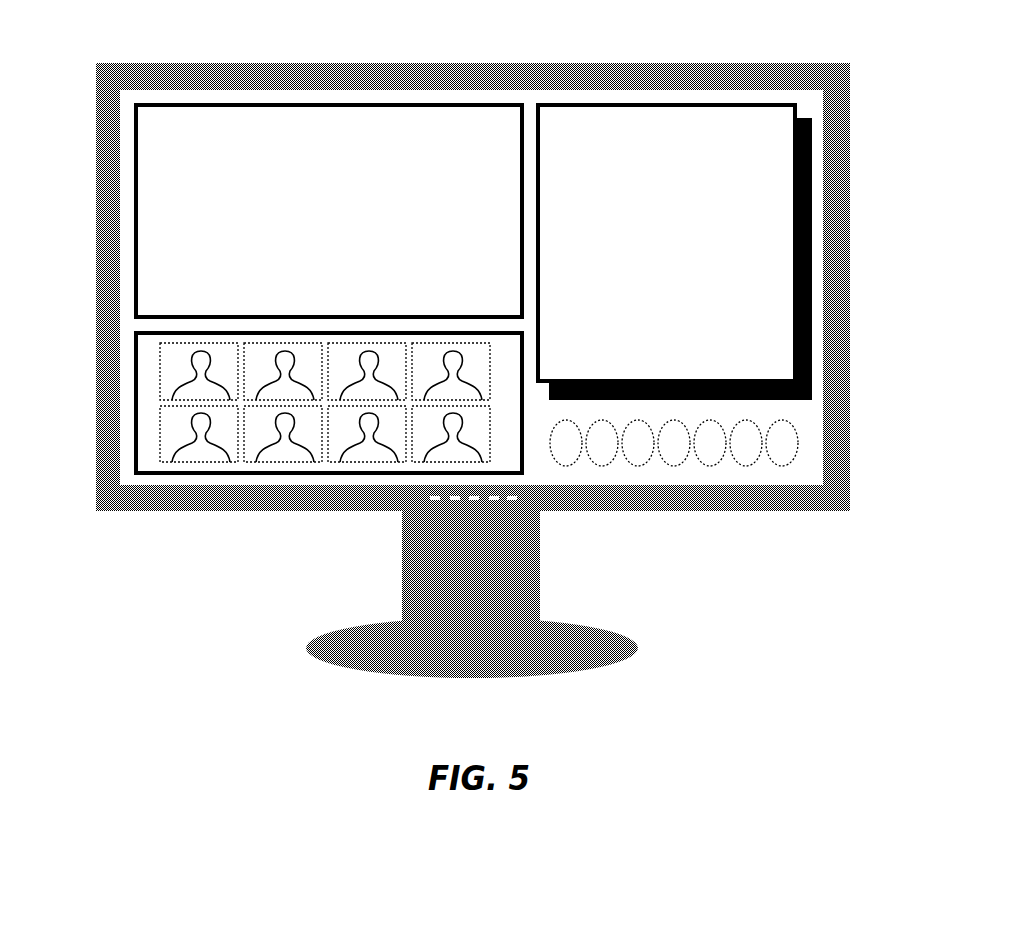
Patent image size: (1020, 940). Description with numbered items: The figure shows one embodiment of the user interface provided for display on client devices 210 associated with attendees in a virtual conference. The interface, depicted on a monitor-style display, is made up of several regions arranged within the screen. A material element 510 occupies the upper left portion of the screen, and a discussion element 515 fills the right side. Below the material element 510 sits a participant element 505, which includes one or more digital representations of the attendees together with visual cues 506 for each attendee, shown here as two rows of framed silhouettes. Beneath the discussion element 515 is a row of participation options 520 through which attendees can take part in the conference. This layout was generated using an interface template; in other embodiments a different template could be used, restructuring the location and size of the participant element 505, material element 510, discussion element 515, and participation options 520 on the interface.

The material element 510 is at (190, 103).
The discussion element 515 is at (768, 103).
The participant element 505 is at (134, 351).
The visual cues 506 is at (160, 386).
The client devices 210 is at (162, 447).
The participation options 520 is at (797, 442).